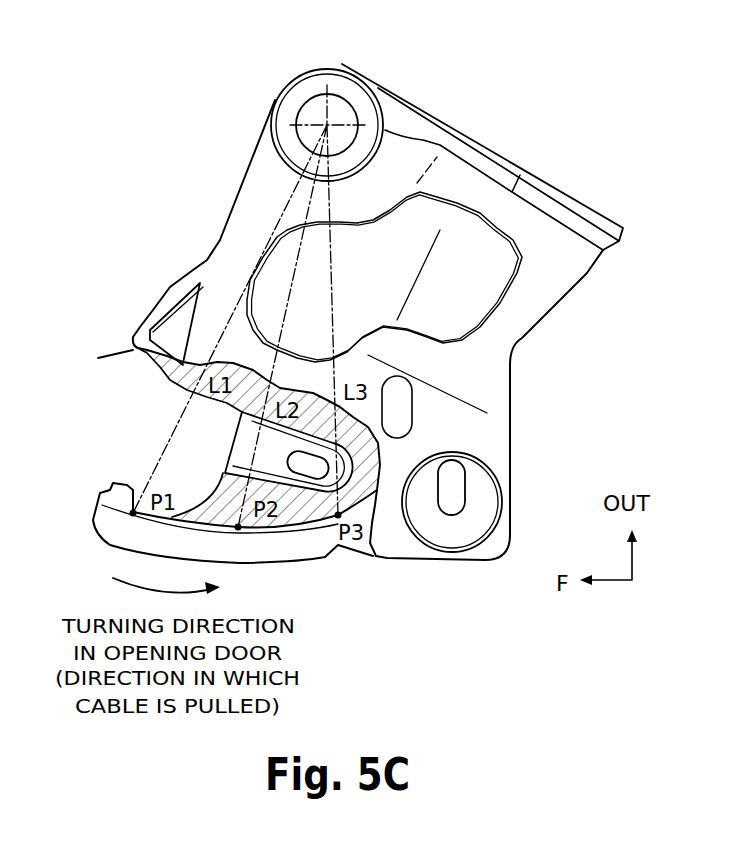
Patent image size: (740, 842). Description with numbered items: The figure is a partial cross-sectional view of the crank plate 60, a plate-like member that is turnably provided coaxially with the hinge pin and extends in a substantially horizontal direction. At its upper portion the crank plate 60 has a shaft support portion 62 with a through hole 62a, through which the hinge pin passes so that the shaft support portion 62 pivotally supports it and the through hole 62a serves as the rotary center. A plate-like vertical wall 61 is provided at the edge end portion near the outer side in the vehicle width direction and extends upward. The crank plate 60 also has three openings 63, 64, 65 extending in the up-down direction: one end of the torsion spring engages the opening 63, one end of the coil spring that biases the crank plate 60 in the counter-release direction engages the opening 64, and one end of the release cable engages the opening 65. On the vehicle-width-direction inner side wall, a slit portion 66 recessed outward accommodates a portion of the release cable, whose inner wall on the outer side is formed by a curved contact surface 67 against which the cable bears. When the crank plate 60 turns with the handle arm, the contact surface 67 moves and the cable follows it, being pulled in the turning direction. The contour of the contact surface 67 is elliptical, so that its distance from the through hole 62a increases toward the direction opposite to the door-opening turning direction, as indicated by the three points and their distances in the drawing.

The crank plate 60 is at (102, 99).
The vertical wall 61 is at (547, 200).
The shaft support portion 62 is at (385, 117).
The through hole 62a is at (295, 125).
The opening 63 is at (411, 414).
The opening 64 is at (296, 452).
The opening 65 is at (461, 481).
The slit portion 66 is at (136, 537).
The contact surface 67 is at (227, 531).